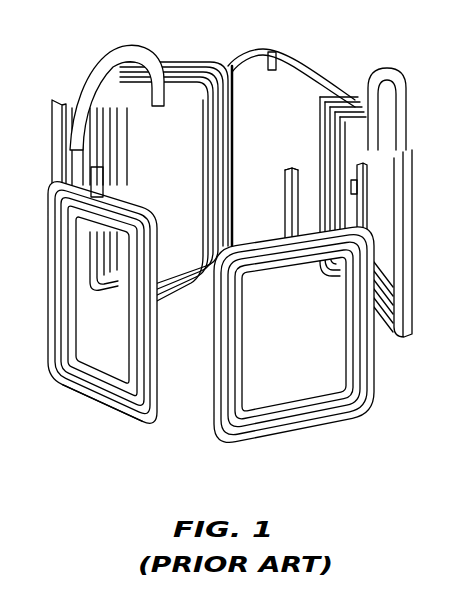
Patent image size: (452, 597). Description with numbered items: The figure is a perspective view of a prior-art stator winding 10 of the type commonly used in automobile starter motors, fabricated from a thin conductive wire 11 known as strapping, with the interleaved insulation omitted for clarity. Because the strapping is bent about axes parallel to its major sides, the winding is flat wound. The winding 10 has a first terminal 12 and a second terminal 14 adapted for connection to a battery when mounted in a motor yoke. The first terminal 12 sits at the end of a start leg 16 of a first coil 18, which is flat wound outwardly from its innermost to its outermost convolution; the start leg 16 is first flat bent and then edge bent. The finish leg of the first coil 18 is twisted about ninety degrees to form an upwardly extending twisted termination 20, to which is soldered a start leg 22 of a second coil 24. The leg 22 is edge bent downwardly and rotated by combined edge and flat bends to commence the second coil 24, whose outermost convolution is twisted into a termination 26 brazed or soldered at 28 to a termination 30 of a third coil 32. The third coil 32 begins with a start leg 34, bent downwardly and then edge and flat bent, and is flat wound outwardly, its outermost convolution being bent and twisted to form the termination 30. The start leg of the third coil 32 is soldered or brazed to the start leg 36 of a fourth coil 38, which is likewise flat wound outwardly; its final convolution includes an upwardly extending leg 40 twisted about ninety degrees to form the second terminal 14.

The stator winding 10 is at (190, 54).
The conductive wire 11 is at (408, 76).
The first terminal 12 is at (291, 167).
The second terminal 14 is at (50, 117).
The start end or leg 16 is at (285, 200).
The first coil 18 is at (383, 385).
The twisted termination 20 is at (366, 200).
The start end or leg 22 is at (366, 177).
The second coil 24 is at (418, 280).
The termination 26 is at (350, 94).
The brazed or soldered joint 28 is at (276, 52).
The termination 30 is at (232, 58).
The third coil 32 is at (241, 136).
The start end or leg 34 is at (104, 58).
The start end or leg 36 is at (104, 176).
The fourth coil 38 is at (88, 428).
The upwardly extending leg 40 is at (50, 212).